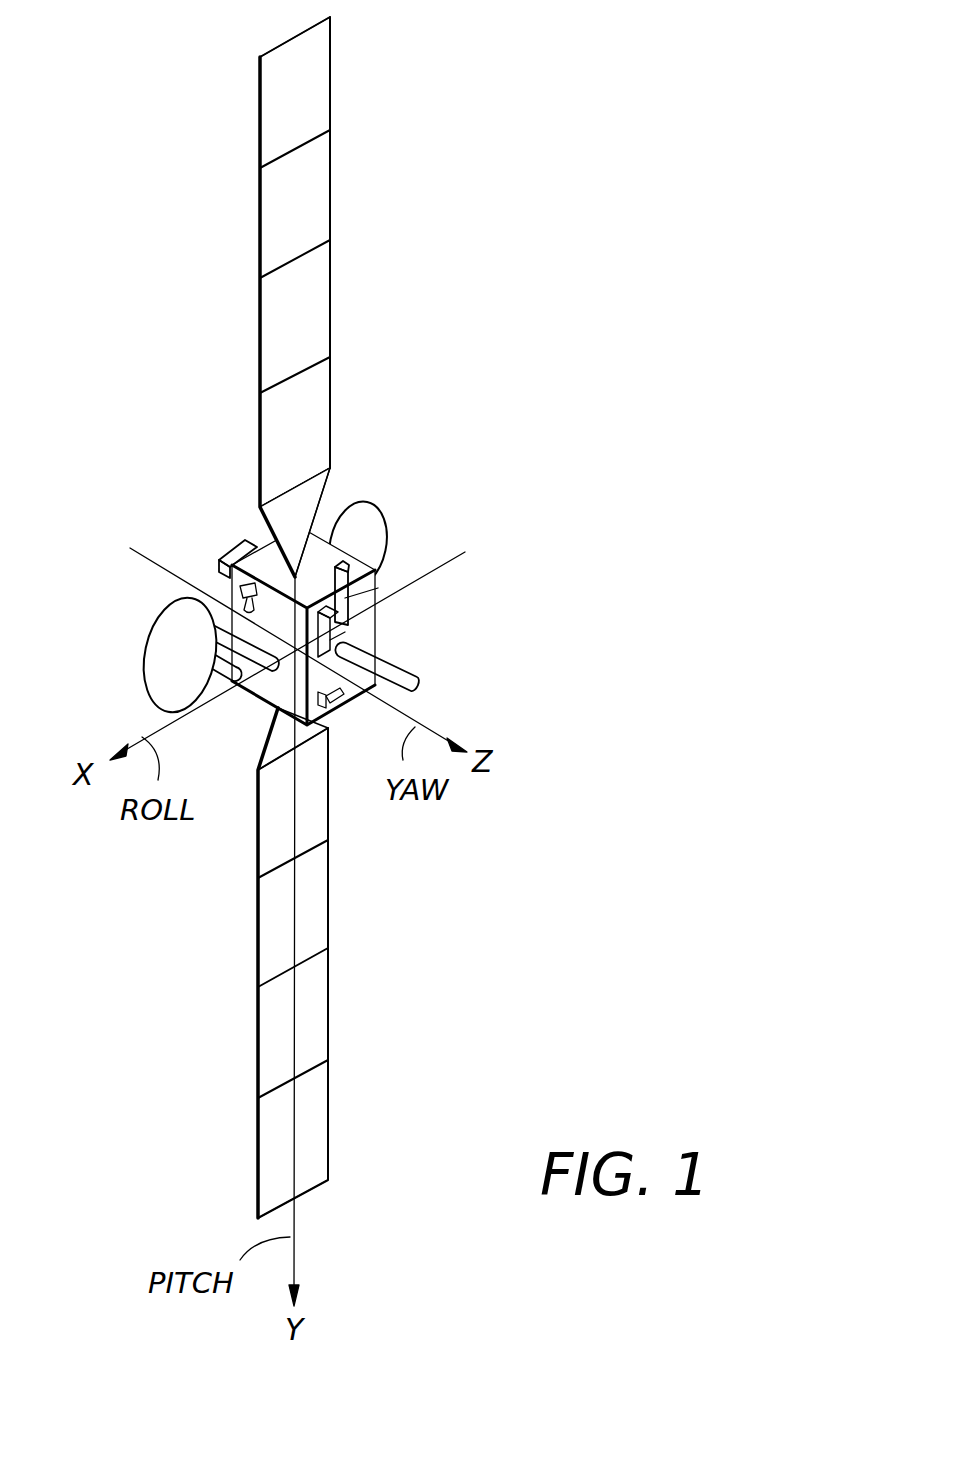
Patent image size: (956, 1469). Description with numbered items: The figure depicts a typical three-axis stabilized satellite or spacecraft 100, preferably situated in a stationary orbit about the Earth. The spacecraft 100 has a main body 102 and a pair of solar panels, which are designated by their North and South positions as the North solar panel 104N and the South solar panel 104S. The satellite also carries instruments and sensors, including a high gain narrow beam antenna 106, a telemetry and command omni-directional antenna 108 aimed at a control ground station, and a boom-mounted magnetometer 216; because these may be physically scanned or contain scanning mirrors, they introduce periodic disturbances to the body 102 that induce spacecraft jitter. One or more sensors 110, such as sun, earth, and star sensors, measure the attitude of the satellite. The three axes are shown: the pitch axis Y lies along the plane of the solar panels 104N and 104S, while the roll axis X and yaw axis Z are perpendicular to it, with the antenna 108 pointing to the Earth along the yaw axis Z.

The spacecraft 100 is at (326, 617).
The main body 102 is at (366, 627).
The North solar panel 104N is at (312, 200).
The South solar panel 104S is at (322, 1010).
The high gain narrow beam antenna 106 is at (373, 512).
The telemetry and command omni-directional antenna 108 is at (400, 672).
The sensor 110 is at (245, 583).
The boom-mounted magnetometer 216 is at (378, 588).